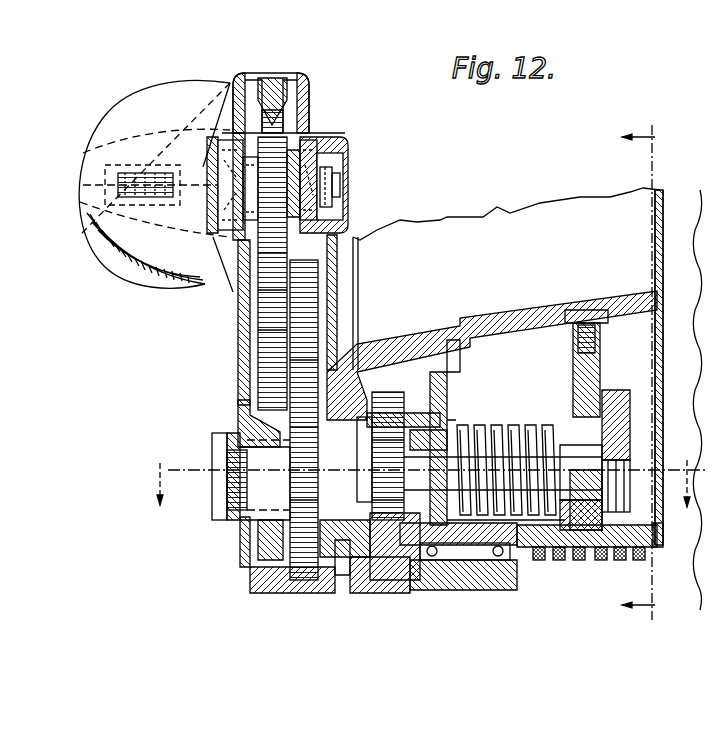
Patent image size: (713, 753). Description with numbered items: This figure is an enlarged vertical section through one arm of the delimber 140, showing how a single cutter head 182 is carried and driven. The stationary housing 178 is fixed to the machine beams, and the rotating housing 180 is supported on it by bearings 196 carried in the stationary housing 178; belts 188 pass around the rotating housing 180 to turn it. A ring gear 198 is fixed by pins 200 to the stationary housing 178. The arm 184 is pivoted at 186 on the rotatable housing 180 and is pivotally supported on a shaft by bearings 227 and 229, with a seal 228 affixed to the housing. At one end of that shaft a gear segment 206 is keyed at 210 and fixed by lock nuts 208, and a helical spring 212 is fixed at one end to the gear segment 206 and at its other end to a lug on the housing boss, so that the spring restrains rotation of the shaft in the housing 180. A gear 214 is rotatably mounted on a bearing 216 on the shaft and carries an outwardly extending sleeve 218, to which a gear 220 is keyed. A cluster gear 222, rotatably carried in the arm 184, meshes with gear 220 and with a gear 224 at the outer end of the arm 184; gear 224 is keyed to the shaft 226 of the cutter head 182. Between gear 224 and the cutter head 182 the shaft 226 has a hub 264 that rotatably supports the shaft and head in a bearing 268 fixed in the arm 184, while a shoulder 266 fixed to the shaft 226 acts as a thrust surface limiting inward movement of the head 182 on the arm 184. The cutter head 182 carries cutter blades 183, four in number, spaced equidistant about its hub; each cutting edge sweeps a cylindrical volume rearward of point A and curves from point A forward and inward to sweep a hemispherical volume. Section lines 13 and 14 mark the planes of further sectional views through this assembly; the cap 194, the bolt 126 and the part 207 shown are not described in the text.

The section line 13— 13 is at (651, 371).
The section line 14— 14 is at (427, 474).
The bolt 126 is at (193, 188).
The delimber 140 is at (467, 172).
The stationary housing 178 is at (528, 554).
The rotating housing 180 is at (522, 218).
The cutter head 182 is at (86, 249).
The cutter blade 183 is at (201, 120).
The arm 184 is at (243, 354).
The pivot 186 is at (202, 444).
The belt 188 is at (618, 558).
The cap 194 is at (296, 75).
The bearing 196 is at (444, 587).
The ring gear 198 is at (398, 593).
The pin 200 is at (417, 586).
The gear segment 206 is at (617, 390).
The end cap 207 is at (633, 461).
The lock nut 208 is at (650, 512).
The key 210 is at (570, 547).
The helical spring 212 is at (527, 422).
The gear 214 is at (390, 394).
The bearing 216 is at (450, 392).
The sleeve 218 is at (313, 595).
The gear 220 is at (292, 548).
The cluster gear 222 is at (258, 367).
The gear 224 is at (288, 143).
The shaft 226 is at (342, 185).
The bearing 227 is at (270, 484).
The seal 228 is at (347, 370).
The bearing 229 is at (347, 575).
The hub 264 is at (191, 172).
The shoulder 266 is at (213, 127).
The bearing 268 is at (219, 250).
The point A is at (85, 130).